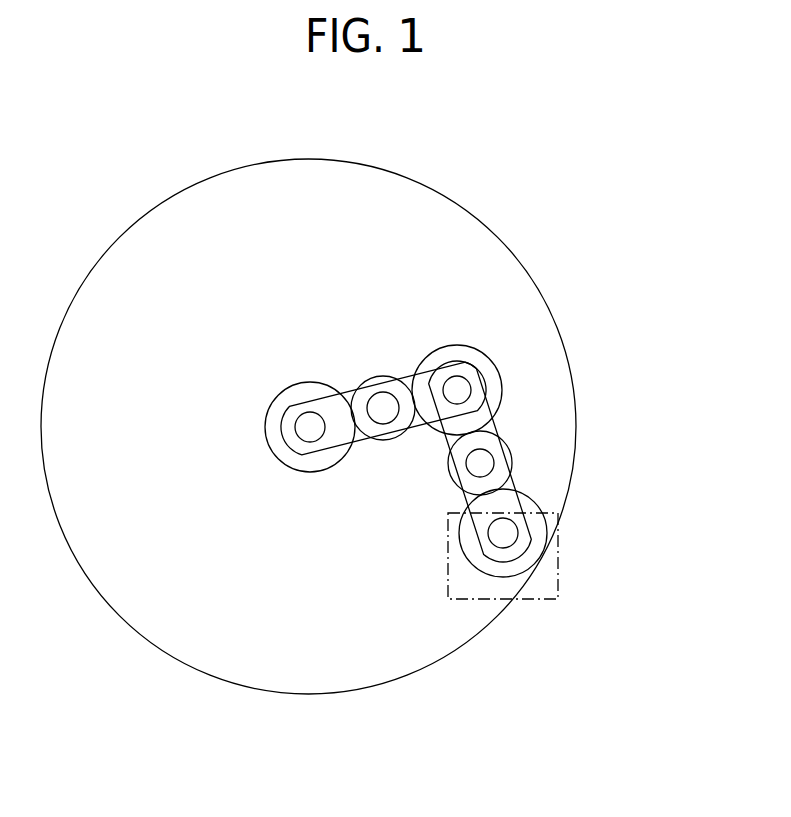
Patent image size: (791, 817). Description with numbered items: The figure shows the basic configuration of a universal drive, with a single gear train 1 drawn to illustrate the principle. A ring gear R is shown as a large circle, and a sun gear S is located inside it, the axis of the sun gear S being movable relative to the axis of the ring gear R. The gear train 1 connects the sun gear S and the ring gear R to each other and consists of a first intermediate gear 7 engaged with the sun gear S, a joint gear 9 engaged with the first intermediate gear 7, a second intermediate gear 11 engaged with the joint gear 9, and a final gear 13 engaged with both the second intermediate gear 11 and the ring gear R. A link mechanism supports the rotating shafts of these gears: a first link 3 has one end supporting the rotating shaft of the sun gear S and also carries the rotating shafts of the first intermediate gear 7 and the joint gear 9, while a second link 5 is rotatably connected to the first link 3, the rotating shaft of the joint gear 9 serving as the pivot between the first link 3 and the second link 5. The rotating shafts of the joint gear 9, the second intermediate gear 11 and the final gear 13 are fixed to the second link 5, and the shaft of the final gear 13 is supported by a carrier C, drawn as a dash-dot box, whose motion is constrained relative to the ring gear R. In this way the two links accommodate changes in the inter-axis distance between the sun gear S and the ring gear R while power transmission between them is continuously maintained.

The gear train 1 is at (473, 438).
The first link 3 is at (332, 447).
The second link 5 is at (522, 500).
The first intermediate gear 7 is at (377, 377).
The joint gear 9 is at (473, 352).
The second intermediate gear 11 is at (510, 460).
The final gear 13 is at (526, 567).
The sun gear S is at (283, 390).
The ring gear R is at (477, 216).
The carrier C is at (558, 572).